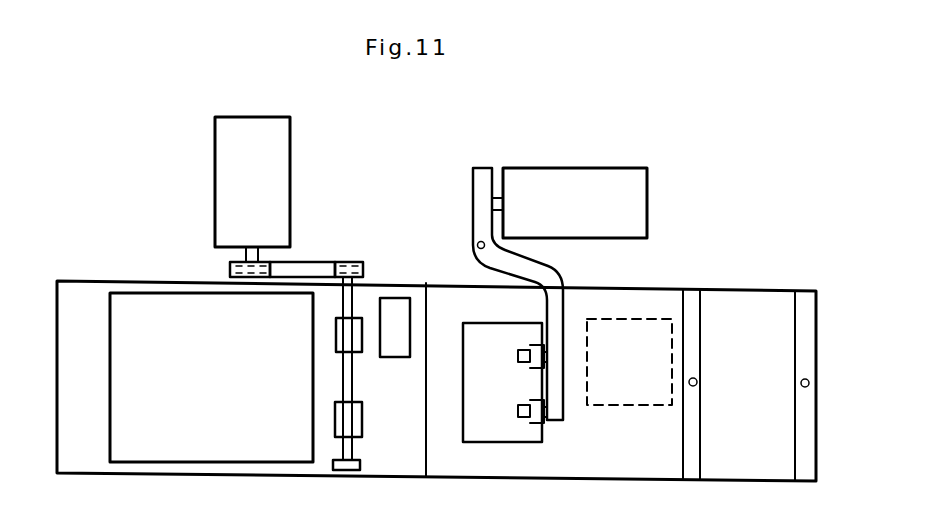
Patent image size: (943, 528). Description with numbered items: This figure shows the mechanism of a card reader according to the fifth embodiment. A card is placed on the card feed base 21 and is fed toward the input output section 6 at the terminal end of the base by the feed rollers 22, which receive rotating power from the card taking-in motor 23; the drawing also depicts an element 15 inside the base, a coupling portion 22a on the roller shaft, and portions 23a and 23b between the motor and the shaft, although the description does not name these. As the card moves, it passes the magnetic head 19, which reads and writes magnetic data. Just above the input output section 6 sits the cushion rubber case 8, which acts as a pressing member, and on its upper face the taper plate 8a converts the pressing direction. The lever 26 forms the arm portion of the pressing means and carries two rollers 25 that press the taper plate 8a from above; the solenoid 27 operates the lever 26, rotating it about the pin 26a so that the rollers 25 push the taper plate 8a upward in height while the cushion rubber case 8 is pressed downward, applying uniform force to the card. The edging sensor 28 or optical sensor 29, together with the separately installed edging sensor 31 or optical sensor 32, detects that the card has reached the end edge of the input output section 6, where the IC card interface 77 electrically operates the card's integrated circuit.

The input output section 6 is at (651, 450).
The cushion rubber case 8 is at (593, 440).
The taper plate 8a is at (525, 442).
The container 15 is at (187, 435).
The magnetic head 19 is at (390, 297).
The card feed base 21 is at (92, 293).
The feed rollers 22 is at (342, 338).
The shaft coupling 22a is at (350, 264).
The card taking-in motor 23 is at (250, 120).
The motor coupling 23a is at (228, 268).
The connecting plate 23b is at (312, 264).
The rollers 25 is at (520, 356).
The lever 26 is at (483, 176).
The pin 26a is at (477, 244).
The solenoid 27 is at (580, 178).
The edging sensor 28 is at (693, 302).
The optical sensor 29 is at (697, 382).
The edging sensor 31 is at (806, 306).
The optical sensor 32 is at (809, 383).
The IC card interface 77 is at (635, 318).